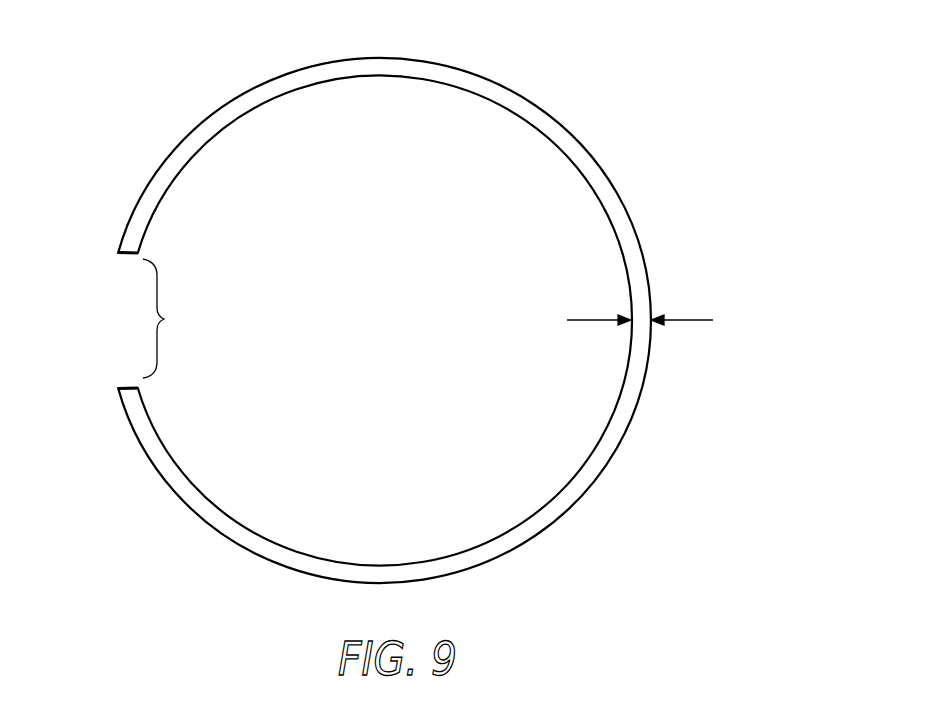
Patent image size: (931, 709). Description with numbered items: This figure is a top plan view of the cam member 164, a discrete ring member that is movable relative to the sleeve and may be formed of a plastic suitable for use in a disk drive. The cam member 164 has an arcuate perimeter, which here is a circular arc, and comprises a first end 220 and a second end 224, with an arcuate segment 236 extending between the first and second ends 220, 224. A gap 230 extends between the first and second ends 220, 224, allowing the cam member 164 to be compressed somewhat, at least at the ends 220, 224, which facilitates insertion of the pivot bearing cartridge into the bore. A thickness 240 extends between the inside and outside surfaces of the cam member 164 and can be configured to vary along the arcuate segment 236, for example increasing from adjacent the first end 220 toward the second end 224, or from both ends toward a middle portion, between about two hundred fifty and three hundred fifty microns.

The cam member 164 is at (787, 240).
The first end 220 is at (118, 246).
The second end 224 is at (118, 393).
The gap 230 is at (166, 318).
The arcuate segment 236 is at (618, 172).
The thickness 240 is at (697, 319).